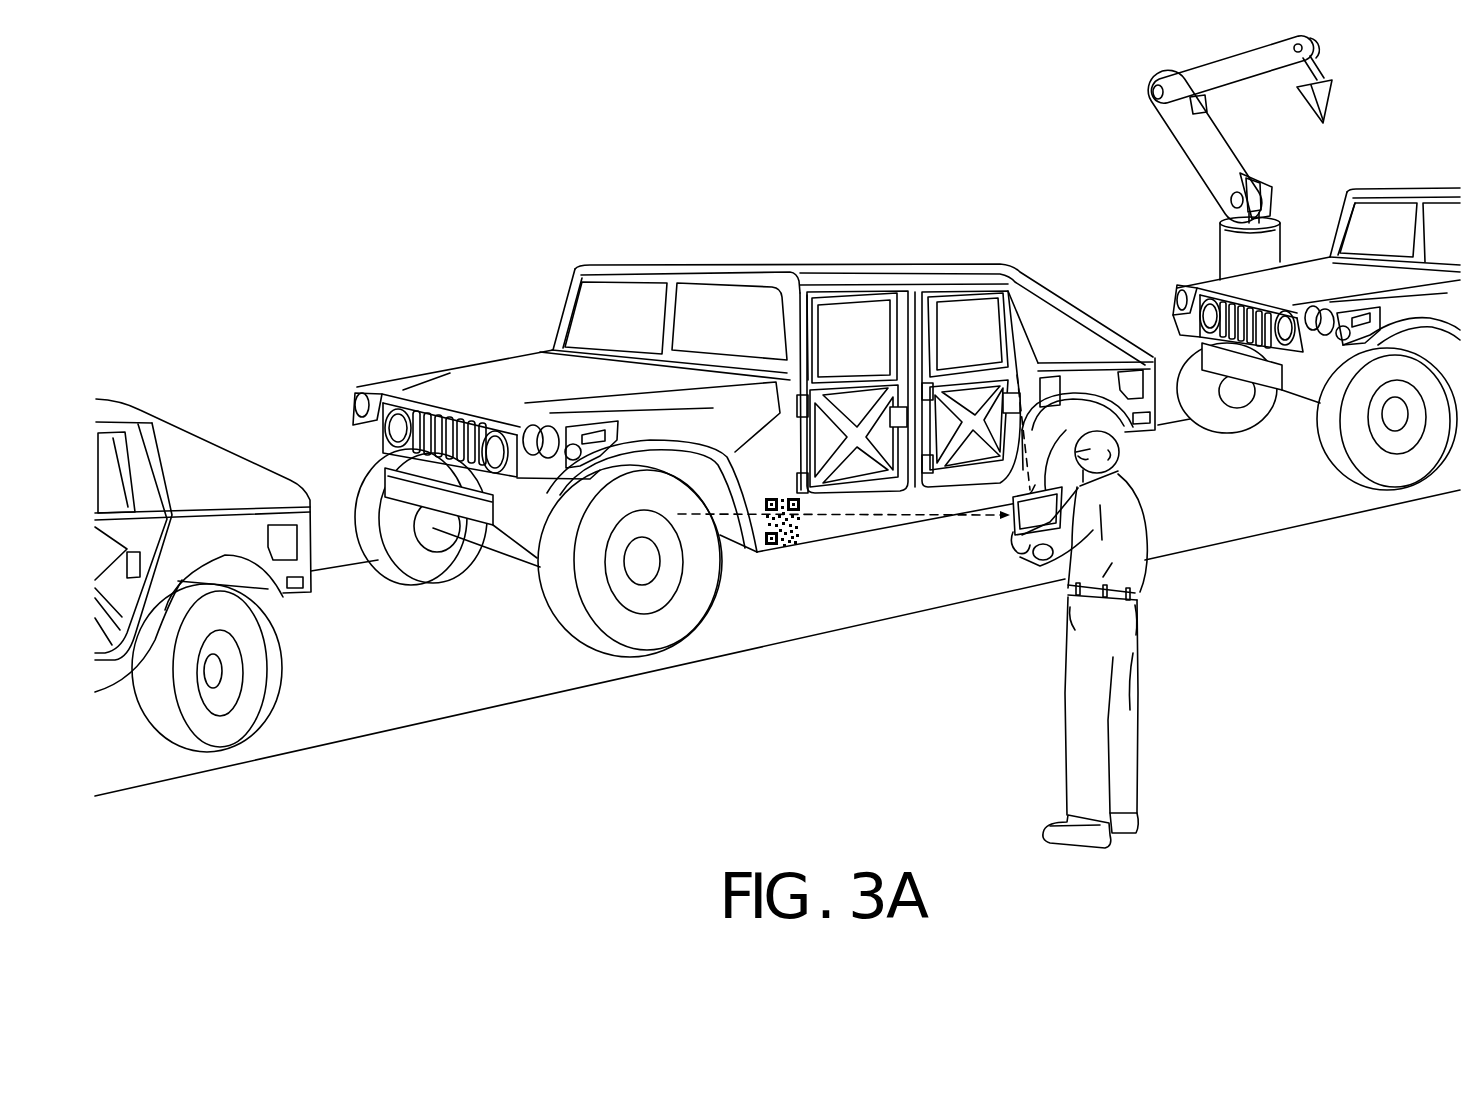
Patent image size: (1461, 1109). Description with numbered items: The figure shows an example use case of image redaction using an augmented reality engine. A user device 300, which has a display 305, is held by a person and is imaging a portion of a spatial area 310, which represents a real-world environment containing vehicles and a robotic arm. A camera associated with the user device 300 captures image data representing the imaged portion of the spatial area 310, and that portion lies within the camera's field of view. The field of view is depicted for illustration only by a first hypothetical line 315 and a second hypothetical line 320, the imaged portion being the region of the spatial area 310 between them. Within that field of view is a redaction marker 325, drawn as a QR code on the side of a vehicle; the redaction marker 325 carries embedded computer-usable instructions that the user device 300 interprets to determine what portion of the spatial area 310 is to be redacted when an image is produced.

The user device 300 is at (1008, 515).
The display 305 is at (1033, 553).
The spatial area 310 is at (514, 90).
The first hypothetical line 315 is at (857, 516).
The second hypothetical line 320 is at (1040, 382).
The redaction marker 325 is at (783, 498).